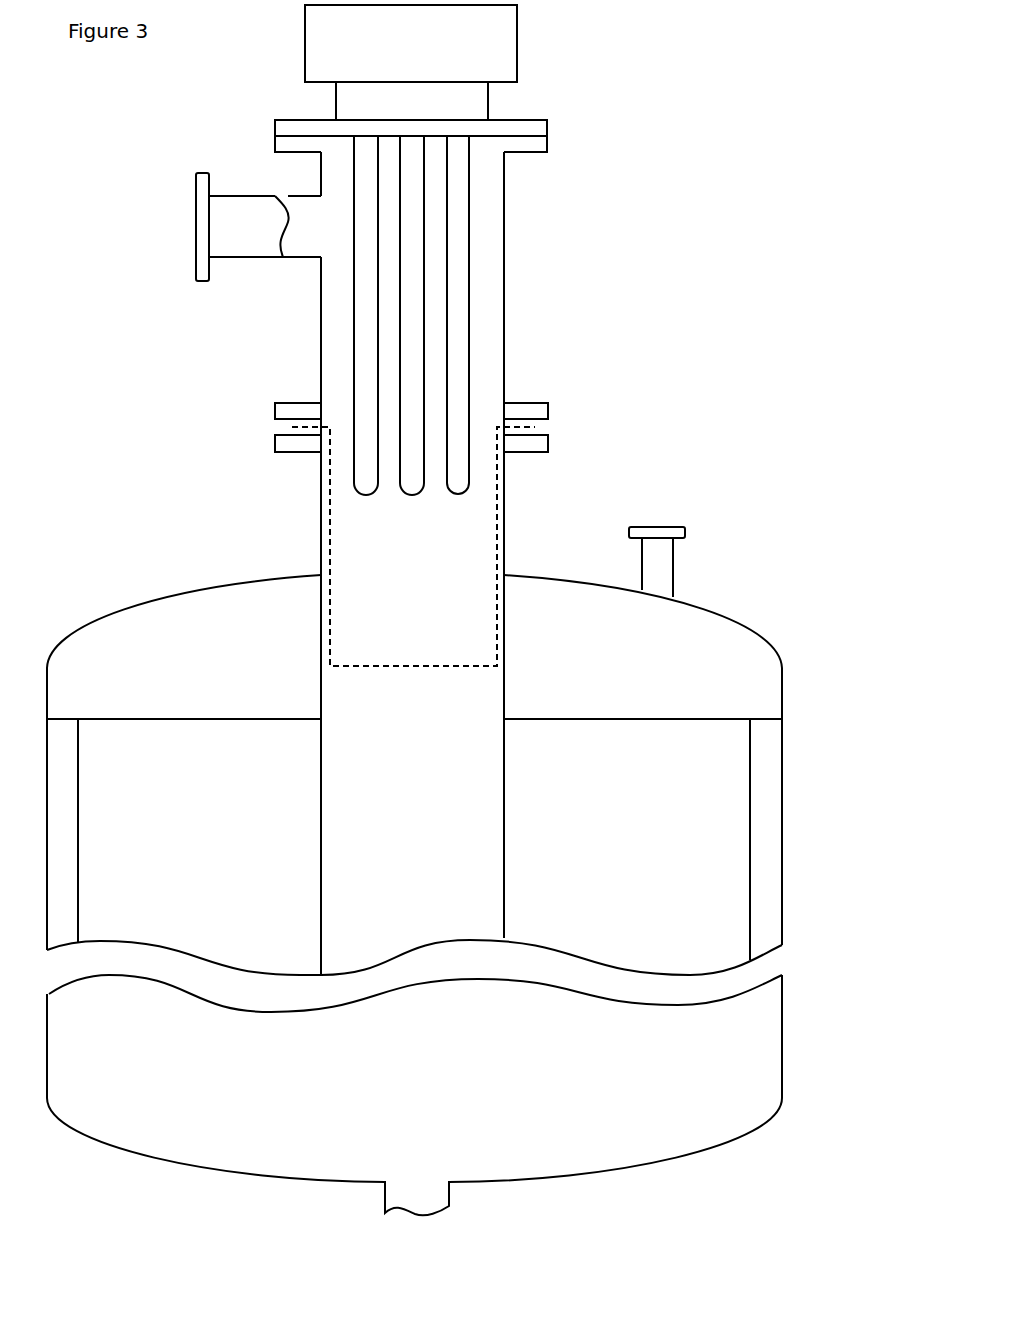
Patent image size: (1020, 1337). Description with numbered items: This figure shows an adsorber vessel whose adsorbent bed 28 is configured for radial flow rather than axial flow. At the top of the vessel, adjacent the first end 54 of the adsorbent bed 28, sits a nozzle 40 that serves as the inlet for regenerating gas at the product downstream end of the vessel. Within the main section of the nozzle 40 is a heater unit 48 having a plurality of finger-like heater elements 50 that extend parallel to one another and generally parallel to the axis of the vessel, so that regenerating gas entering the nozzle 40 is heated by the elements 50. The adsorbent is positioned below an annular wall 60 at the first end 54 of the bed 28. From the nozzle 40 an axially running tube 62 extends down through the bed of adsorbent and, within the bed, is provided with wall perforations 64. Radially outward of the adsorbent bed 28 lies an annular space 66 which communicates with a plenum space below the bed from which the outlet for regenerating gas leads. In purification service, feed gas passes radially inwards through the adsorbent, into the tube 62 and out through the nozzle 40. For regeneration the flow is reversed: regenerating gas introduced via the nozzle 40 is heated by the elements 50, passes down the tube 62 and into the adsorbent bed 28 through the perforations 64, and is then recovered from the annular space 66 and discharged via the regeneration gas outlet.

The adsorbent bed 28 is at (414, 871).
The nozzle 40 is at (507, 357).
The heater unit 48 is at (478, 102).
The heater elements 50 is at (473, 281).
The first end 54 is at (643, 734).
The annular wall 60 is at (201, 716).
The tube 62 is at (505, 665).
The wall perforations 64 is at (318, 780).
The annular space 66 is at (765, 835).